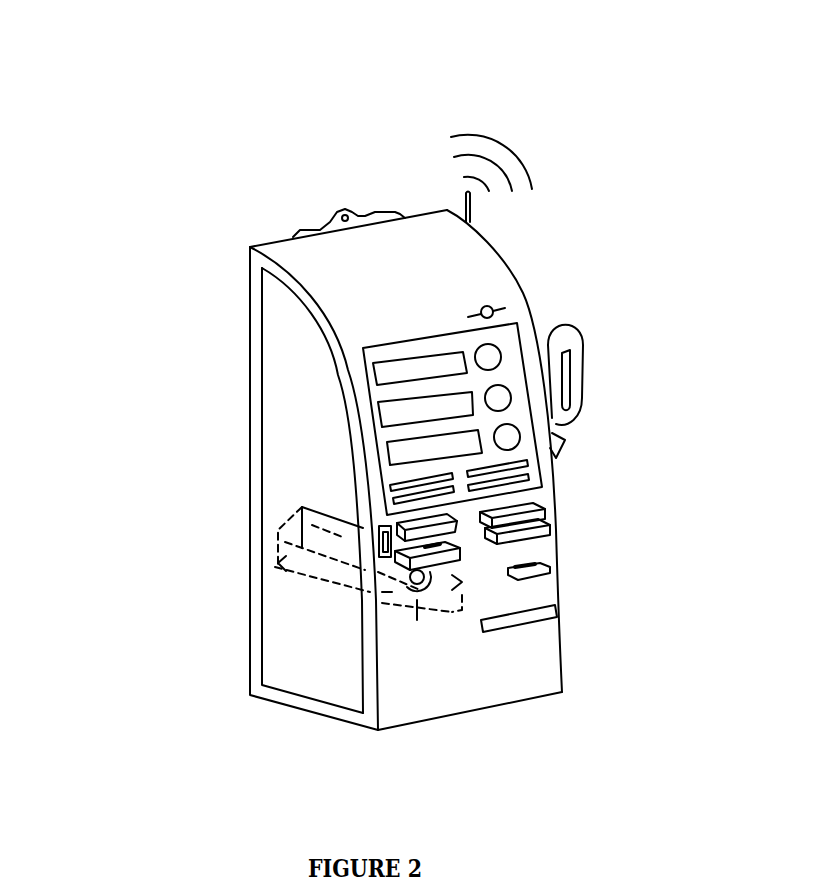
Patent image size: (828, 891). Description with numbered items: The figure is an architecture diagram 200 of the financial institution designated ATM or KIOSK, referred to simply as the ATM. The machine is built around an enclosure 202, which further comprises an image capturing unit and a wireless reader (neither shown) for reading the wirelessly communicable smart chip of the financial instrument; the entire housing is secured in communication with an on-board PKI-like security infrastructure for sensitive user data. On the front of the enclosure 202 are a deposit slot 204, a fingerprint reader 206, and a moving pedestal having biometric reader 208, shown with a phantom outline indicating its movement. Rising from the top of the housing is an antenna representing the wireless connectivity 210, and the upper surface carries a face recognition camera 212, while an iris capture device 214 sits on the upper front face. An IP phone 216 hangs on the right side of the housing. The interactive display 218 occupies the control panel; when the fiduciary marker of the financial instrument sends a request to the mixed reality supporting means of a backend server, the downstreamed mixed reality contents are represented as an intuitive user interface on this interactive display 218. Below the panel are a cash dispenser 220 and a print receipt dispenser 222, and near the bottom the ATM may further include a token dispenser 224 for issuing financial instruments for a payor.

The architecture diagram 200 is at (292, 372).
The enclosure 202 is at (395, 522).
The deposit slot 204 is at (383, 545).
The fingerprint reader 206 is at (363, 597).
The moving pedestal having biometric reader 208 is at (420, 607).
The wireless connectivity 210 is at (547, 190).
The face recognition camera 212 is at (362, 245).
The iris capture device 214 is at (497, 297).
The IP phone 216 is at (583, 340).
The interactive display 218 is at (490, 420).
The cash dispenser 220 is at (545, 518).
The print receipt dispenser 222 is at (548, 577).
The token dispenser 224 is at (560, 620).